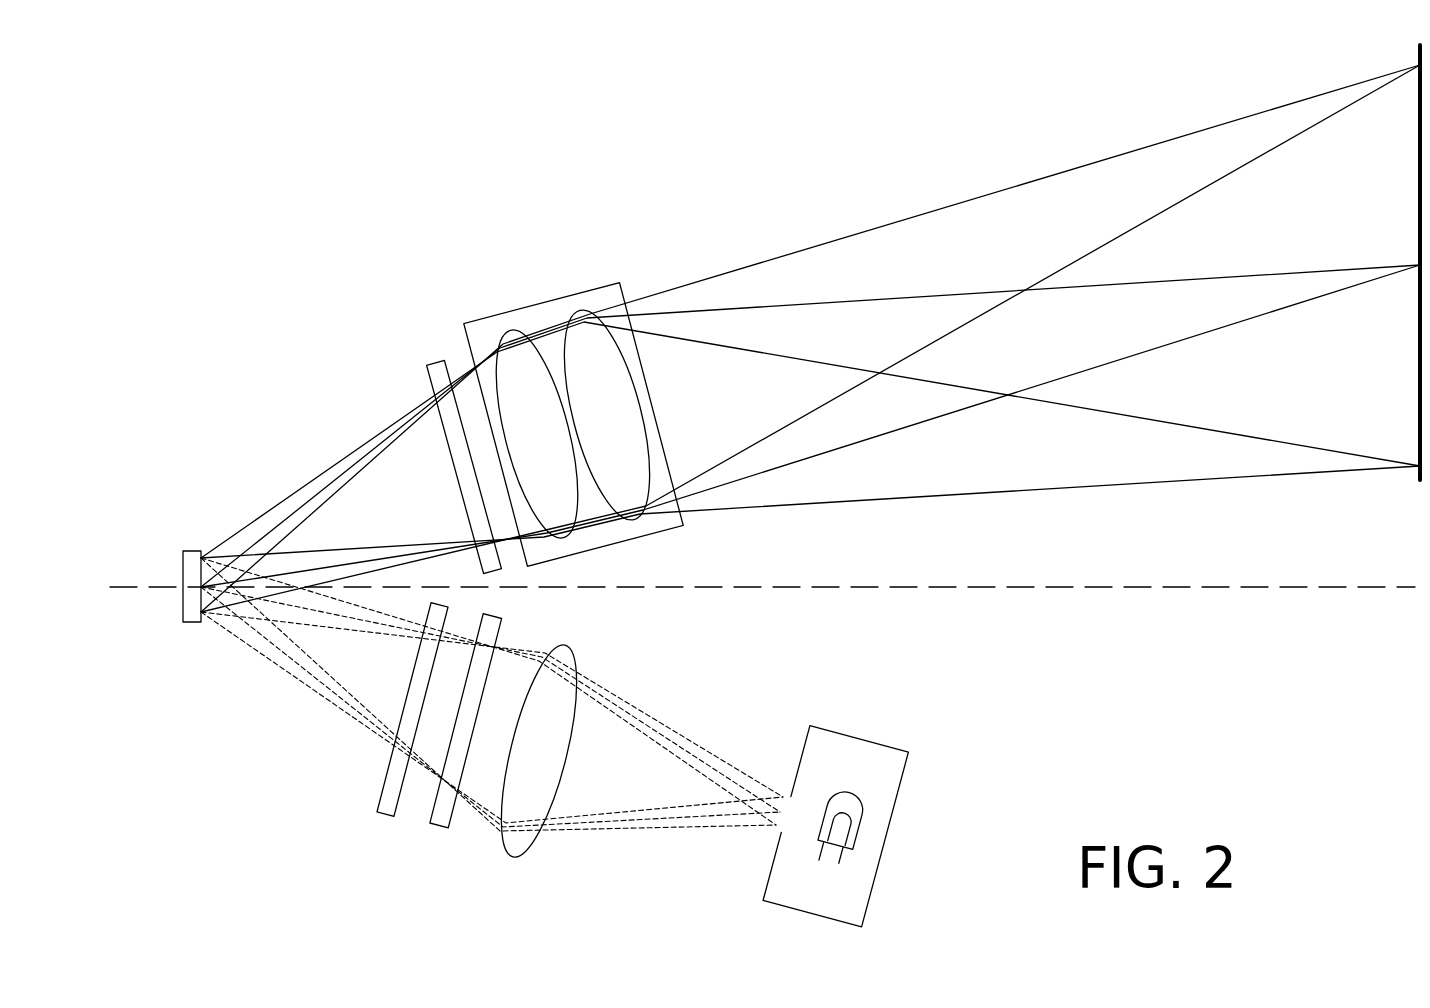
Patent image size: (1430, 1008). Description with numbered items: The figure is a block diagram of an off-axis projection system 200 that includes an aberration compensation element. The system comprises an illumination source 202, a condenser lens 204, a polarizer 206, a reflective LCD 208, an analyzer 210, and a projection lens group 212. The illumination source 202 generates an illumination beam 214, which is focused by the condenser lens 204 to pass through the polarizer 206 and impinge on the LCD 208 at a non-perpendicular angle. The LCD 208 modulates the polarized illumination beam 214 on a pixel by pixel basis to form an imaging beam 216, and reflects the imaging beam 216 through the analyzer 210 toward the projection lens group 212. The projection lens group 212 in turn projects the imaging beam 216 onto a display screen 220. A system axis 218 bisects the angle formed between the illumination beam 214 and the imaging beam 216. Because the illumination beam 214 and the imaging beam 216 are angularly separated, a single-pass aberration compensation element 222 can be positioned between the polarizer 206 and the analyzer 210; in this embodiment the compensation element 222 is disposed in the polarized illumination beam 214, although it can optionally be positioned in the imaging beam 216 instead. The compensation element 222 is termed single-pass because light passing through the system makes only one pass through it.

The off-axis projection system 200 is at (288, 163).
The illumination source 202 is at (857, 735).
The condenser lens 204 is at (498, 842).
The polarizer 206 is at (430, 820).
The reflective LCD 208 is at (183, 560).
The analyzer 210 is at (428, 366).
The projection lens group 212 is at (525, 305).
The illumination beam 214 is at (267, 660).
The imaging beam 216 is at (307, 485).
The system axis 218 is at (1105, 588).
The display screen 220 is at (1417, 62).
The single-pass aberration compensation element 222 is at (380, 790).